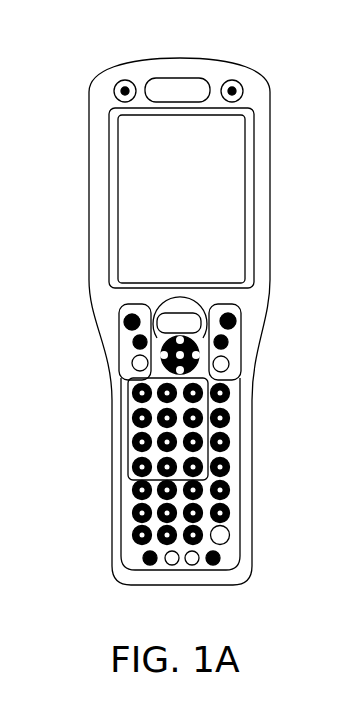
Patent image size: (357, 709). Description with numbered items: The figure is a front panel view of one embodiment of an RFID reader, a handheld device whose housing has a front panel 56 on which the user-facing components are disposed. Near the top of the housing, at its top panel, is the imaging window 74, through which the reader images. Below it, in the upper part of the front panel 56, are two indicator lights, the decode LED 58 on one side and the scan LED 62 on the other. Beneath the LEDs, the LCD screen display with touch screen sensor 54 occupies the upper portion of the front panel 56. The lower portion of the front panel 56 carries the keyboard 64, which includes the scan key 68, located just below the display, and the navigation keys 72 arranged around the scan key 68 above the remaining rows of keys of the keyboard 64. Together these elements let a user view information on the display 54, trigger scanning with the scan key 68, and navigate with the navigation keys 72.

The LCD screen display with touch screen sensor 54 is at (127, 197).
The front panel 56 is at (89, 138).
The decode LED 58 is at (113, 89).
The scan LED 62 is at (244, 84).
The keyboard 64 is at (135, 432).
The scan key 68 is at (160, 313).
The navigation keys 72 is at (132, 353).
The imaging window 74 is at (176, 58).